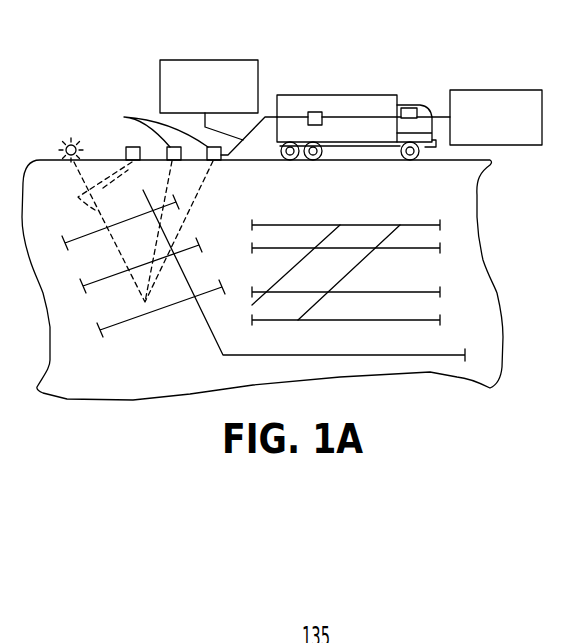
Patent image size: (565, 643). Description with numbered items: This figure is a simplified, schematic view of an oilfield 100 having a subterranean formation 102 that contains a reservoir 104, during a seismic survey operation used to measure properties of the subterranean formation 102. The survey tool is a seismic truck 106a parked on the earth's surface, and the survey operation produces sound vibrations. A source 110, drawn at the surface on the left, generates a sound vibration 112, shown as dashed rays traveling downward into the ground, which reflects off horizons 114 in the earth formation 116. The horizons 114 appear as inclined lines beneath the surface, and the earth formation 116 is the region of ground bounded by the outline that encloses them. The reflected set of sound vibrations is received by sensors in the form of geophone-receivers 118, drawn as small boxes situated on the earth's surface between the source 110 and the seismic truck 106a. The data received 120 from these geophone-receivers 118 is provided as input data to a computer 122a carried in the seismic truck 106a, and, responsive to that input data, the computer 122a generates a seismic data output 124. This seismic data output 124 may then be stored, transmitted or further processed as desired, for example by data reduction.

The oilfield 100 is at (440, 68).
The subterranean formation 102 is at (353, 248).
The reservoir 104 is at (418, 286).
The seismic truck 106a is at (375, 95).
The source 110 is at (71, 138).
The sound vibration 112 is at (78, 197).
The horizons 114 is at (66, 250).
The earth formation 116 is at (210, 330).
The geophone-receivers 118 is at (132, 147).
The data received 120 is at (200, 60).
The computer 122a is at (318, 112).
The seismic data output 124 is at (495, 90).